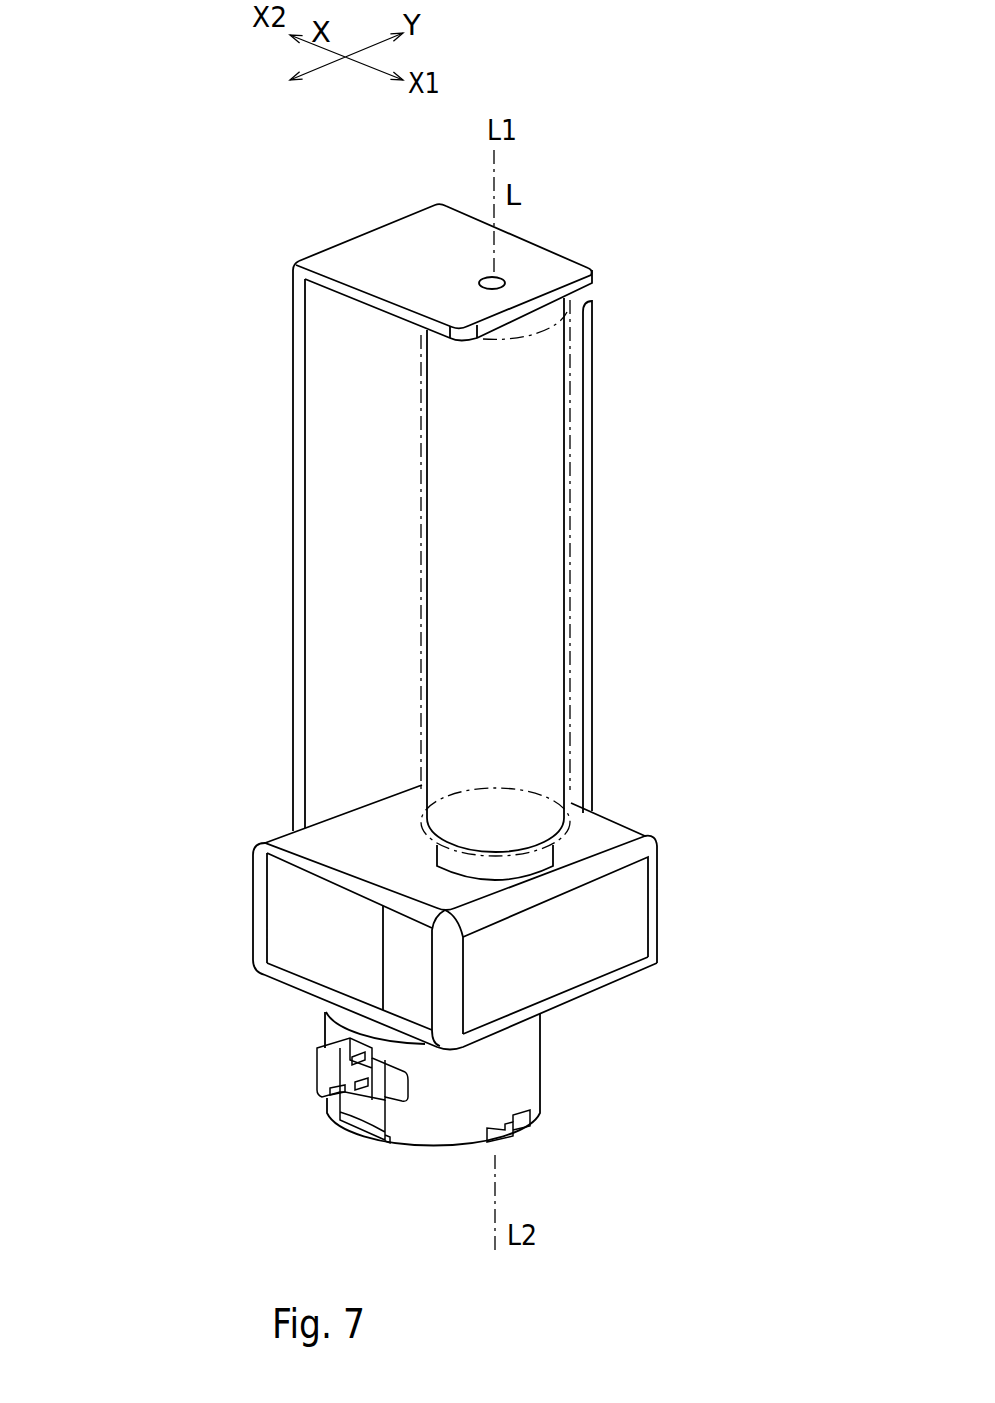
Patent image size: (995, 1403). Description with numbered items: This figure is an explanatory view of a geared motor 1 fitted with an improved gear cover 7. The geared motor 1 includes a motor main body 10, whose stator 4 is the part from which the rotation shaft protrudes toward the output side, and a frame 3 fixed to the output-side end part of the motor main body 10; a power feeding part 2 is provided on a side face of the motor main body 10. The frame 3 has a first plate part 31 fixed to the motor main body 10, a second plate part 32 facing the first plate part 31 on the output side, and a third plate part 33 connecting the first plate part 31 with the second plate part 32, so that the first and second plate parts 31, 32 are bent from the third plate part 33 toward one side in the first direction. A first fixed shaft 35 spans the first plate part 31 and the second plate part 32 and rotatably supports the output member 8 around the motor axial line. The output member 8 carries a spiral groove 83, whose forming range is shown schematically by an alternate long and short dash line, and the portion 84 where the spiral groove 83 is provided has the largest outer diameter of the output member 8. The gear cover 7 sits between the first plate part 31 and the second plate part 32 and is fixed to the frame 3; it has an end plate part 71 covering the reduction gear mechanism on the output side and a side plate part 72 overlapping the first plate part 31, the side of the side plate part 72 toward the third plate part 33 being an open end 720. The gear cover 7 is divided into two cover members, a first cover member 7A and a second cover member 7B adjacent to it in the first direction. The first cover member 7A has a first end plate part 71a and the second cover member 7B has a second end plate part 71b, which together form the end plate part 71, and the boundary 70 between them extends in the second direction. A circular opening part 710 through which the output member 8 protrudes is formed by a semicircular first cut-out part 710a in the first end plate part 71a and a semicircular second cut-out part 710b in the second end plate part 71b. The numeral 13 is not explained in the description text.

The geared motor 1 is at (575, 232).
The power feeding part 2 is at (347, 1137).
The frame 3 is at (338, 248).
The stator 4 is at (437, 1127).
The gear cover 7 is at (147, 842).
The first cover member 7A is at (288, 863).
The second cover member 7B is at (408, 957).
The output member 8 is at (413, 428).
The motor main body 10 is at (550, 1110).
The motor housing 13 is at (533, 1070).
The first plate part 31 is at (297, 982).
The second plate part 32 is at (407, 240).
The third plate part 33 is at (293, 342).
The first fixed shaft 35 is at (505, 280).
The boundary 70 is at (440, 872).
The end plate part 71 is at (238, 792).
The first end plate part 71a is at (335, 848).
The second end plate part 71b is at (608, 830).
The side plate part 72 is at (580, 950).
The spiral groove 83 is at (396, 548).
The portion where the spiral groove is provided 84 is at (590, 445).
The opening part 710 is at (475, 785).
The first cut-out part 710a is at (427, 843).
The second cut-out part 710b is at (558, 855).
The open end 720 is at (397, 792).